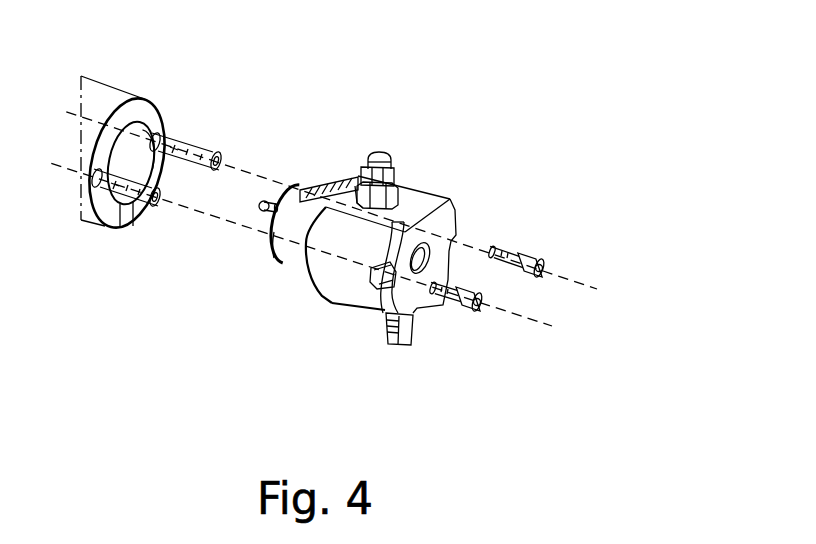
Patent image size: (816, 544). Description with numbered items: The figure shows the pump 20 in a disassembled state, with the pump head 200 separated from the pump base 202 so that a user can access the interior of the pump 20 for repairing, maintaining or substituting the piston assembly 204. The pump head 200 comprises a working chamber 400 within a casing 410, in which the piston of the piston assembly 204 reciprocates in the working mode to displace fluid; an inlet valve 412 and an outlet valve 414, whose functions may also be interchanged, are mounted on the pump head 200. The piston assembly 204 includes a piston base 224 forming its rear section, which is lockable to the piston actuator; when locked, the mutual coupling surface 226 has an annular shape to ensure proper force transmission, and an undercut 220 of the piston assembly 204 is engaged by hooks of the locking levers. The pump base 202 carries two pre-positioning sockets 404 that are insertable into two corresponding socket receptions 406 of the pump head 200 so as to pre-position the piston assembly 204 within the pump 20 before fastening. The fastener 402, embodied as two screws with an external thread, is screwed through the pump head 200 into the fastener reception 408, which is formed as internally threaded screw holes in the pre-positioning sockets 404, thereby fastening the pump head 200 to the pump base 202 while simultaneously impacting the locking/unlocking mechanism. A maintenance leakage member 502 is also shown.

The pump 20 is at (588, 139).
The pump head 200 is at (488, 430).
The pump base 202 is at (181, 118).
The piston assembly 204 is at (279, 194).
The undercut 220 is at (259, 203).
The piston base 224 is at (329, 200).
The coupling surface 226 is at (275, 232).
The working chamber 400 is at (356, 181).
The fastener 402 is at (513, 249).
The pre-positioning sockets 404 is at (80, 44).
The socket receptions 406 is at (297, 267).
The fastener reception 408 is at (160, 210).
The casing 410 is at (423, 200).
The inlet valve 412 is at (378, 152).
The outlet valve 414 is at (398, 346).
The maintenance leakage member 502 is at (318, 195).